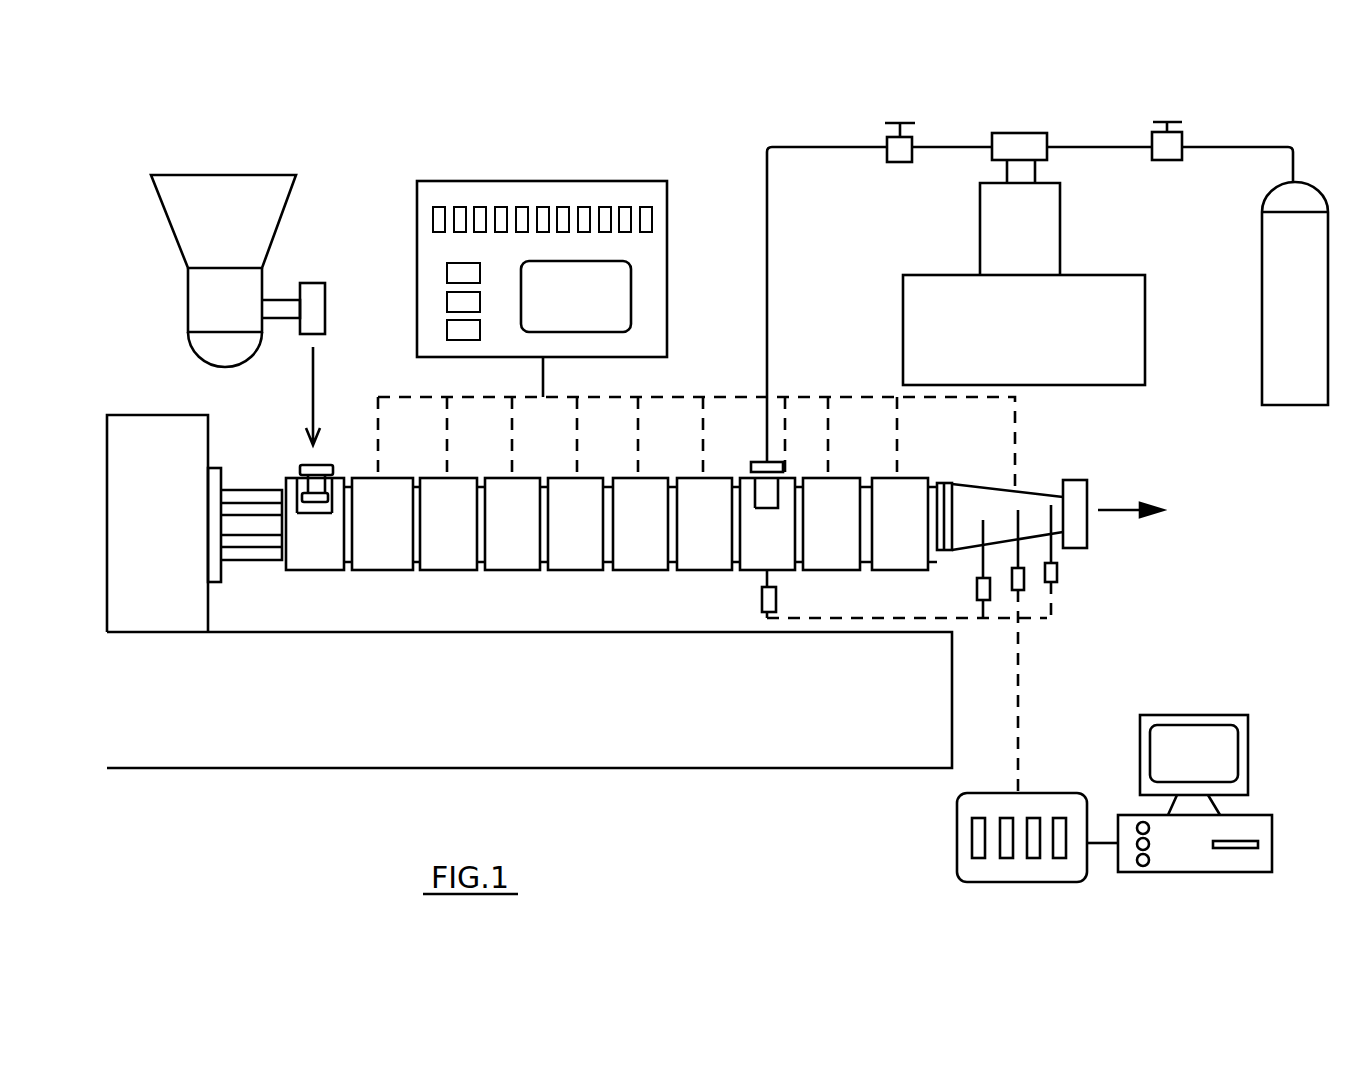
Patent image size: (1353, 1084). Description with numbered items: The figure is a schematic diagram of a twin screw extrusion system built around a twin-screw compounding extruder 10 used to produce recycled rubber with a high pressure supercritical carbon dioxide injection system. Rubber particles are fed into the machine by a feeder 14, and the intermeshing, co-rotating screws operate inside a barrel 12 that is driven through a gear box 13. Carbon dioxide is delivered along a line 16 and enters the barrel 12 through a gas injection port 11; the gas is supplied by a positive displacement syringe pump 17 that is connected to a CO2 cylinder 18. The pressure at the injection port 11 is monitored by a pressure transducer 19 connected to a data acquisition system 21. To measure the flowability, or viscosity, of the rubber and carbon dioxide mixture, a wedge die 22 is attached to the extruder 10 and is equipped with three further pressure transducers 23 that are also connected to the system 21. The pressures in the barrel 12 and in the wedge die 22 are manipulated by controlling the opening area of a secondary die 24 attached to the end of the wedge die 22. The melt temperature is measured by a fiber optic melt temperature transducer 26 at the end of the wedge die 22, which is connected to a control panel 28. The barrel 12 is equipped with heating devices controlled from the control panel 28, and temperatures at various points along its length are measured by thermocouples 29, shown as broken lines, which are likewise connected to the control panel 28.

The twin-screw compounding extruder 10 is at (438, 604).
The gas injection port 11 is at (772, 500).
The barrel 12 is at (646, 552).
The gear box 13 is at (132, 420).
The feeder 14 is at (257, 195).
The line 16 is at (767, 225).
The positive displacement syringe pump 17 is at (1135, 320).
The CO2 cylinder 18 is at (1272, 250).
The pressure transducer 19 is at (767, 578).
The data acquisition system 21 is at (1257, 812).
The wedge die 22 is at (975, 486).
The pressure transducers 23 is at (977, 590).
The secondary die 24 is at (1078, 528).
The fiber optic melt temperature transducer 26 is at (1018, 488).
The control panel 28 is at (449, 192).
The thermocouples 29 is at (378, 425).